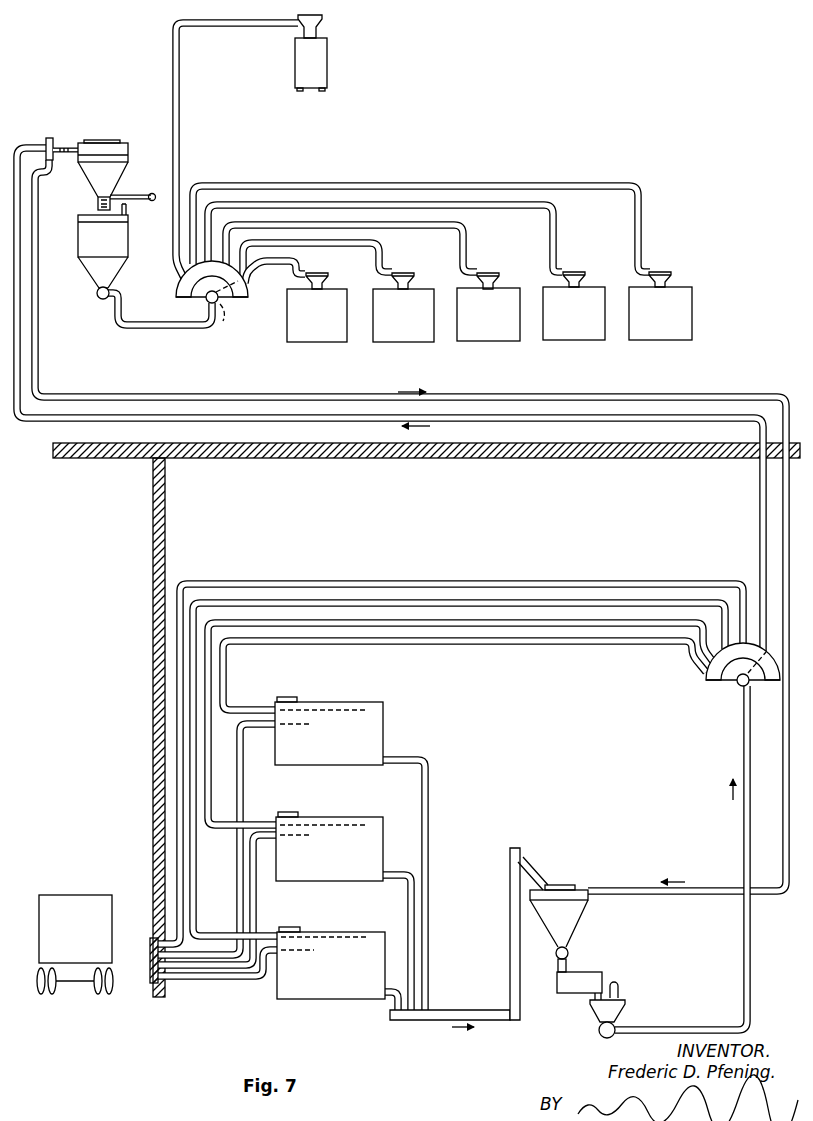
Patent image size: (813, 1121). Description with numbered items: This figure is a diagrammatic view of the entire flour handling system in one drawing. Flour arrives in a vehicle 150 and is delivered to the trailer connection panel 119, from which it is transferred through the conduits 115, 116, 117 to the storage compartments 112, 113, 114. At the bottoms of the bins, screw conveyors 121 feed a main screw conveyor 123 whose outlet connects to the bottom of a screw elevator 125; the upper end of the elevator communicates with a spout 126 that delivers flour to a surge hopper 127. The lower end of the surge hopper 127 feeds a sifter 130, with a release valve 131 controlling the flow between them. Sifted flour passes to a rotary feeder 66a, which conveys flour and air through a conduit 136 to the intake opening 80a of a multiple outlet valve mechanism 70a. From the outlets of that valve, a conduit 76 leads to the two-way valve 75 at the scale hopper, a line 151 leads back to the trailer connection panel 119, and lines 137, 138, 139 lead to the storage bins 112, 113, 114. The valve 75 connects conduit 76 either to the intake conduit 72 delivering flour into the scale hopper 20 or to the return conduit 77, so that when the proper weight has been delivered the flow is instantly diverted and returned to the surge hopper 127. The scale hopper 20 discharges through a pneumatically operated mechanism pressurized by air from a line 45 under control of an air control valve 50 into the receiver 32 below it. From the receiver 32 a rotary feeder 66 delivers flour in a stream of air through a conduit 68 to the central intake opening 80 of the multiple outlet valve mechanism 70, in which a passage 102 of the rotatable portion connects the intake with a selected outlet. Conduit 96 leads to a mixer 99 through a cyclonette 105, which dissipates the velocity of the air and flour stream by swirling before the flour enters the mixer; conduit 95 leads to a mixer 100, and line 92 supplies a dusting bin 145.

The scale hopper 20 is at (125, 156).
The receiver 32 is at (122, 240).
The line 45 is at (132, 184).
The air control valve 50 is at (152, 201).
The rotary feeder 66 is at (95, 294).
The rotary feeder 66a is at (599, 1030).
The conduit 68 is at (158, 329).
The multiple outlet valve mechanism 70 is at (176, 296).
The multiple outlet valve mechanism 70a is at (704, 681).
The intake conduit 72 is at (70, 147).
The valve 75 is at (50, 137).
The conduit 76 is at (22, 141).
The return conduit 77 is at (38, 228).
The central intake opening 80 is at (206, 304).
The intake opening 80a is at (740, 688).
The conduit 92 is at (178, 109).
The conduit 95 is at (330, 250).
The conduit 96 is at (274, 265).
The mixer 99 is at (310, 338).
The mixer 100 is at (398, 338).
The passage 102 is at (239, 304).
The cyclonette 105 is at (410, 275).
The storage compartment 112 is at (344, 750).
The storage compartment 113 is at (342, 861).
The storage compartment 114 is at (344, 978).
The conduit 115 is at (243, 789).
The conduit 116 is at (257, 907).
The conduit 117 is at (198, 980).
The trailer connection panel 119 is at (147, 965).
The screw conveyors 121 is at (429, 834).
The screw conveyor 123 is at (448, 1009).
The screw elevator 125 is at (510, 918).
The spout 126 is at (528, 865).
The surge hopper 127 is at (579, 915).
The sifter 130 is at (602, 975).
The valve 131 is at (570, 955).
The conduit 136 is at (745, 942).
The line 137 is at (603, 599).
The line 138 is at (508, 620).
The line 139 is at (626, 645).
The dusting bin 145 is at (324, 50).
The vehicle 150 is at (87, 945).
The line 151 is at (506, 583).